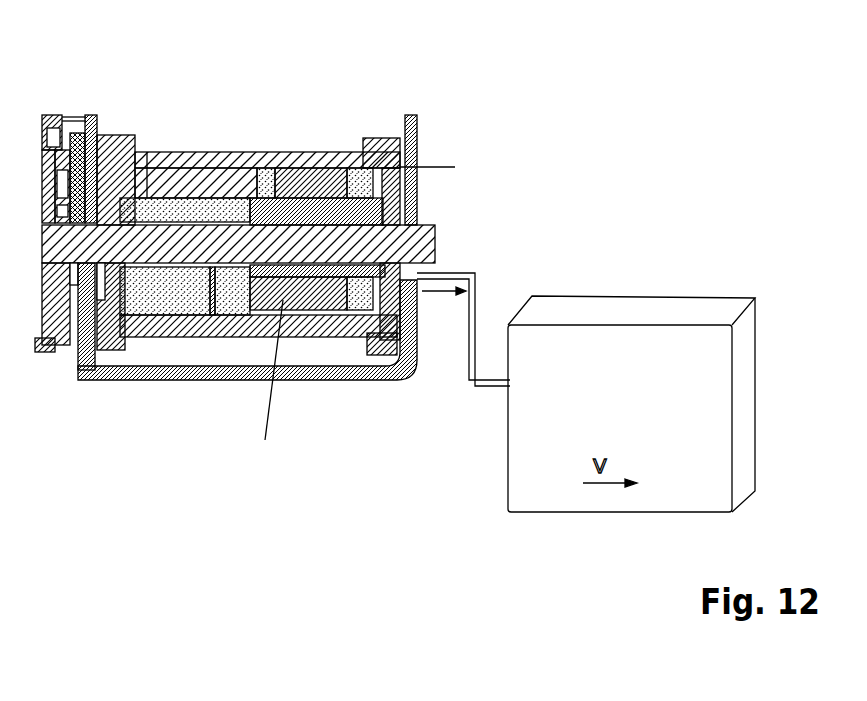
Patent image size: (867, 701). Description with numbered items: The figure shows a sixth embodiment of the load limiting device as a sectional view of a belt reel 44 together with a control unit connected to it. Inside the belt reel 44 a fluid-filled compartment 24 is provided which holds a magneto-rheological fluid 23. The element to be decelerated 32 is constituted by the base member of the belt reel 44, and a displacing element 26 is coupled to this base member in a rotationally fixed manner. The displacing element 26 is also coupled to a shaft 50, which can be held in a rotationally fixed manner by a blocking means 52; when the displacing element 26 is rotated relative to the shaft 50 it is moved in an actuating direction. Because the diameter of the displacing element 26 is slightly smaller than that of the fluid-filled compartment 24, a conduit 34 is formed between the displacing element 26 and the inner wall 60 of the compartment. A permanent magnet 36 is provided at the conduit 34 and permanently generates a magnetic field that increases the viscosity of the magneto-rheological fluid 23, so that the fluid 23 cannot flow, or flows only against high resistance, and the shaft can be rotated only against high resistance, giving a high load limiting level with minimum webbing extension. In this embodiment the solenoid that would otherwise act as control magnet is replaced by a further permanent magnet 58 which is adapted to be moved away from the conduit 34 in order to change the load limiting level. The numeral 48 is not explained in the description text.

The magneto-rheological fluid 23 is at (156, 147).
The fluid-filled compartment 24 is at (144, 159).
The displacing element 26 is at (318, 337).
The element to be decelerated 32 is at (227, 180).
The conduit 34 is at (320, 150).
The permanent magnet 36 is at (282, 150).
The belt reel 44 is at (170, 352).
The shaft 48 is at (238, 157).
The shaft 50 is at (200, 337).
The blocking means 52 is at (77, 86).
The permanent magnet 58 is at (350, 337).
The inner wall 60 is at (268, 388).